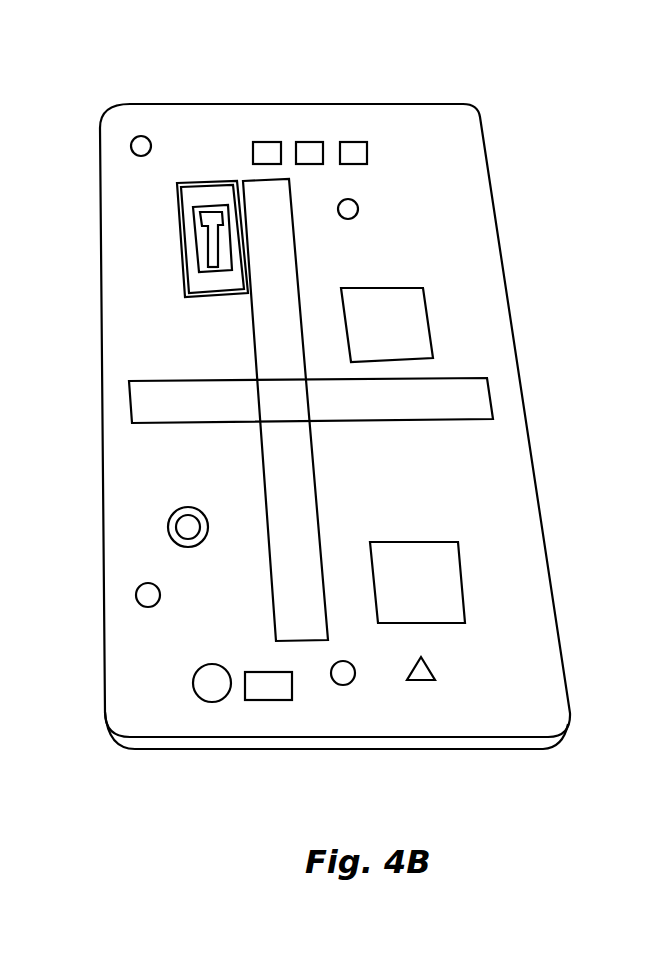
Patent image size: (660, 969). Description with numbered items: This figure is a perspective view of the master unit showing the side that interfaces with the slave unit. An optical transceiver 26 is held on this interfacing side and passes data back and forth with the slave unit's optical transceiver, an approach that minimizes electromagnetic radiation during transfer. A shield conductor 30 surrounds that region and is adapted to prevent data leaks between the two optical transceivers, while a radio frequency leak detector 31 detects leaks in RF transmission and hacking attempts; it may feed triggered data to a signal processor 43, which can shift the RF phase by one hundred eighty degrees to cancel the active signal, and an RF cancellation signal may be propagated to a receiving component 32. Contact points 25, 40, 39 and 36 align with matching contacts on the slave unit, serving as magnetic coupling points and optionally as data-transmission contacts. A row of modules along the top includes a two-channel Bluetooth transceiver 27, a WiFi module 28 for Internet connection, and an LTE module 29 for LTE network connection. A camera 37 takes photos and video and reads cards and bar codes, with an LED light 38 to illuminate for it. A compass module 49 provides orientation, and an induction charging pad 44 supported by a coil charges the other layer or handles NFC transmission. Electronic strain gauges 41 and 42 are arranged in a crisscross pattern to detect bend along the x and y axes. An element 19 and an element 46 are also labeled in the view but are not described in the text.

The card body 19 is at (465, 478).
The contact point 25 is at (142, 135).
The optical transceiver 26 is at (215, 212).
The two-channel Bluetooth transceiver 27 is at (267, 142).
The WiFi module 28 is at (310, 142).
The LTE module 29 is at (356, 142).
The shield conductor 30 is at (205, 240).
The RF leak detector 31 is at (178, 236).
The receiving component 32 is at (210, 270).
The contact point 36 is at (149, 607).
The camera 37 is at (210, 702).
The LED light 38 is at (270, 700).
The contact point 39 is at (343, 686).
The contact point 40 is at (354, 199).
The electronic strain gauge 41 is at (298, 268).
The electronic strain gauge 42 is at (432, 378).
The signal processor 43 is at (427, 303).
The induction charging pad 44 is at (463, 590).
The triangular marker 46 is at (437, 673).
The compass module 49 is at (167, 532).